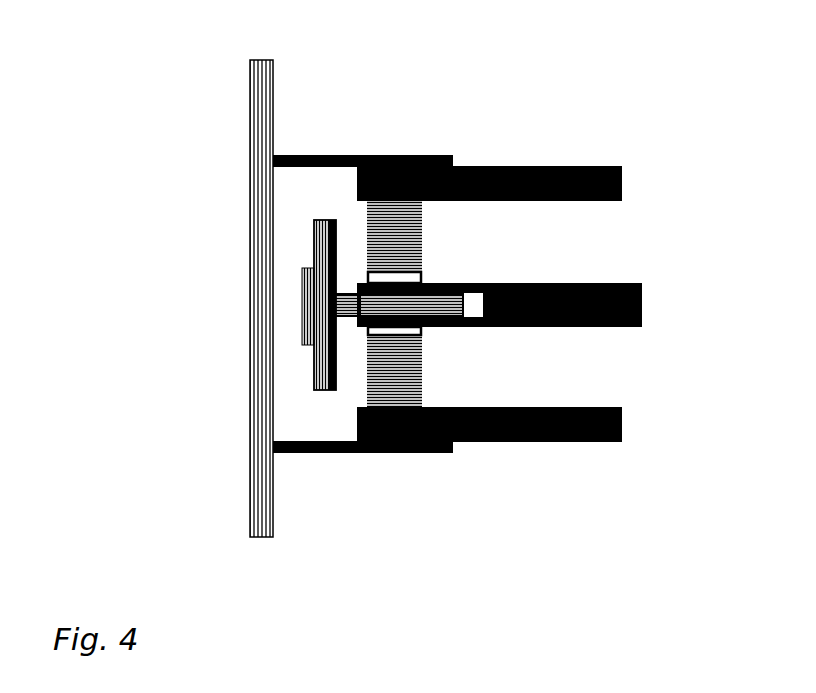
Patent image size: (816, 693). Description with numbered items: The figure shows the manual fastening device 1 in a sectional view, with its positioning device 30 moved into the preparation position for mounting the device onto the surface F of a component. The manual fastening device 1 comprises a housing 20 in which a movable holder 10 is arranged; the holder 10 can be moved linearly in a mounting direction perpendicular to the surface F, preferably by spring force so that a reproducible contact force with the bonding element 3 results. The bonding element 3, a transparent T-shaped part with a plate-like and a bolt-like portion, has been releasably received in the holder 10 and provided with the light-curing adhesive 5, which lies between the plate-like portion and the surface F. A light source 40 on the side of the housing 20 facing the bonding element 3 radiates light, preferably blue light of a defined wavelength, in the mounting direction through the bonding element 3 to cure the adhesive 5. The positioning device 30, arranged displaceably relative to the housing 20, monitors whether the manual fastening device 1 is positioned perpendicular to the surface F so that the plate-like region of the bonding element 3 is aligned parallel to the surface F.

The manual fastening device 1 is at (701, 58).
The bonding element 3 is at (325, 390).
The light-curing adhesive 5 is at (305, 298).
The holder 10 is at (642, 283).
The housing 20 is at (580, 166).
The positioning device 30 is at (396, 215).
The light source 40 is at (380, 155).
The surface F is at (260, 122).